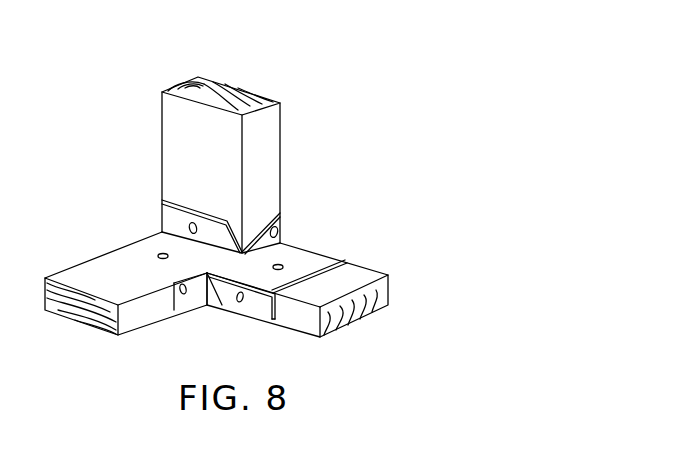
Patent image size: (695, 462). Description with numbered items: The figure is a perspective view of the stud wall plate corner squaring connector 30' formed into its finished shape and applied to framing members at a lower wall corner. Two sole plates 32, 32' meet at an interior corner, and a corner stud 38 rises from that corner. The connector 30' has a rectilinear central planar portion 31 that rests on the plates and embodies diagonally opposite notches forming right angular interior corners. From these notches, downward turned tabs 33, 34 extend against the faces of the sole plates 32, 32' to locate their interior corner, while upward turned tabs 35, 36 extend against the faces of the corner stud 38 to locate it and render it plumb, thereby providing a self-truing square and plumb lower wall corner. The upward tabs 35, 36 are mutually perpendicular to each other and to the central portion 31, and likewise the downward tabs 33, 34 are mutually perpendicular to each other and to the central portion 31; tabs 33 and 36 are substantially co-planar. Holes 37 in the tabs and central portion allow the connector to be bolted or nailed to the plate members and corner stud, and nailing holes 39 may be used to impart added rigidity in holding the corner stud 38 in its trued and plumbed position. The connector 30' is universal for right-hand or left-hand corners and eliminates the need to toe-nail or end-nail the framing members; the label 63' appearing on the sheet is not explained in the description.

The corner stud 38 is at (270, 132).
The upward turned tab 35 is at (173, 219).
The upward turned tab 36 is at (278, 222).
The holes 37 is at (194, 222).
The formed connector 30' is at (216, 268).
The central planar portion 31 is at (313, 268).
The sole plate 32 is at (308, 308).
The sole plate 32' is at (120, 314).
The downward turned tab 33 is at (186, 307).
The downward turned tab 34 is at (265, 306).
The nailing holes 39 is at (207, 273).
The joint structure 63' is at (18, 196).